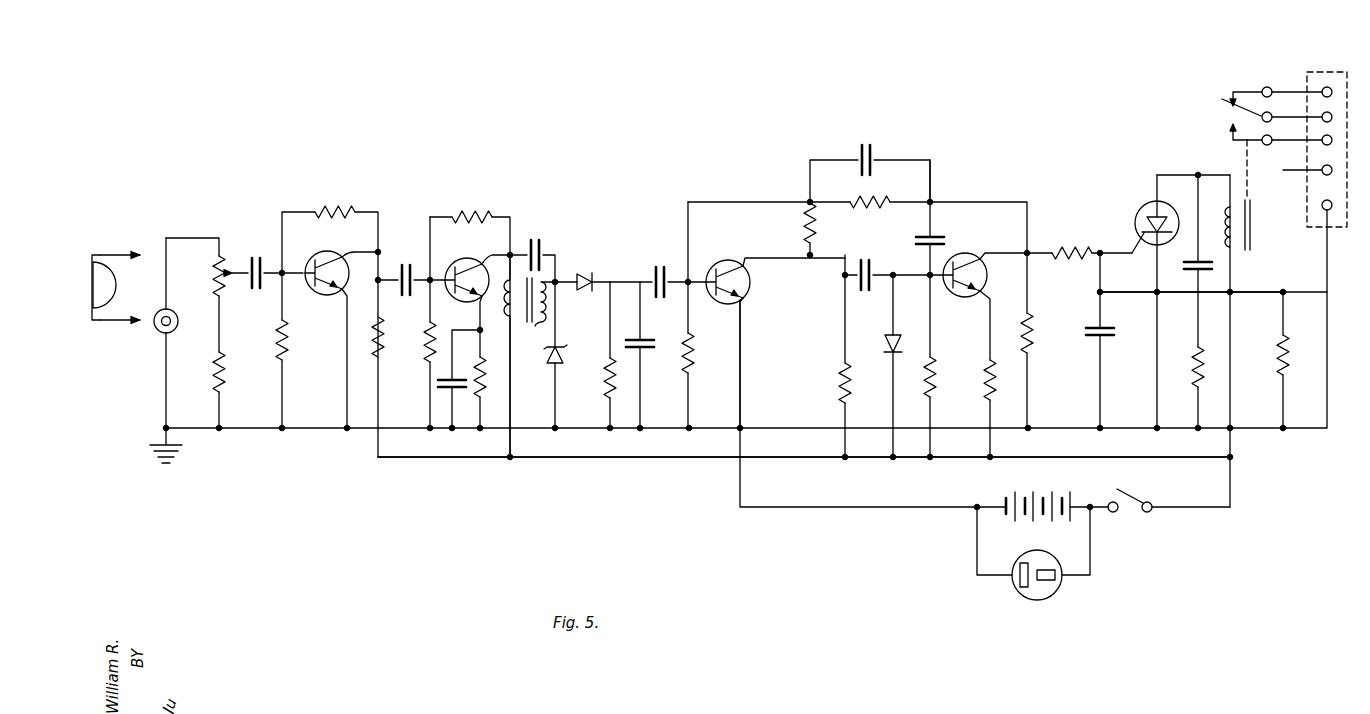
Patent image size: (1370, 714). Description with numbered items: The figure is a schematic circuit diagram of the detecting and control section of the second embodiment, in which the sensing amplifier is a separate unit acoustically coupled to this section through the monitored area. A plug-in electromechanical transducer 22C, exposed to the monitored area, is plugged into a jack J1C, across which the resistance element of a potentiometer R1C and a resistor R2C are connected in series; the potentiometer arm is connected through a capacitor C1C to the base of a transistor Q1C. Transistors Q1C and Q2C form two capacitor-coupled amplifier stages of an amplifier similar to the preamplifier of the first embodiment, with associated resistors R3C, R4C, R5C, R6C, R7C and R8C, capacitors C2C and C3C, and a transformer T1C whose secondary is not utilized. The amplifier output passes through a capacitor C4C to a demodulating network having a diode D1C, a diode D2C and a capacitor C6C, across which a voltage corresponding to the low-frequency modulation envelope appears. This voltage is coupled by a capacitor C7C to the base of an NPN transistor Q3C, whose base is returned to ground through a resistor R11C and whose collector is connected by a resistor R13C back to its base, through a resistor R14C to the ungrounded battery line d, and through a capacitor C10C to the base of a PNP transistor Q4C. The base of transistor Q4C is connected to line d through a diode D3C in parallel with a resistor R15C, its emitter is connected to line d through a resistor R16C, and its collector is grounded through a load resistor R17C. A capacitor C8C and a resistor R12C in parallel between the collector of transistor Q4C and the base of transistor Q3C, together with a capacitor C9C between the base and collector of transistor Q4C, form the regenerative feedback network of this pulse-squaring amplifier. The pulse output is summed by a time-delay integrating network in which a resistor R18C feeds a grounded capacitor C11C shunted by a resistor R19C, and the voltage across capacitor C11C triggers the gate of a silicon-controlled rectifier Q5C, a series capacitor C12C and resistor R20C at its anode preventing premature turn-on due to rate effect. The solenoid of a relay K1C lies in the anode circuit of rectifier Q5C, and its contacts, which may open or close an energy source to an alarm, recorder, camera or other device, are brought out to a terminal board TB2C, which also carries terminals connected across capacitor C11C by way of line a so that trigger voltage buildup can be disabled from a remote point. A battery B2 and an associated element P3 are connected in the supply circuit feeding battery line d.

The electromechanical transducer 22C is at (96, 252).
The jack J1C is at (154, 326).
The potentiometer R1C is at (219, 290).
The resistor R2C is at (234, 378).
The capacitor C1C is at (272, 258).
The resistor R3C is at (268, 346).
The transistor Q1C is at (342, 252).
The resistor R4C is at (335, 210).
The capacitor C2C is at (405, 262).
The resistor R5C is at (395, 340).
The resistor R6C is at (428, 358).
The transistor Q2C is at (452, 270).
The resistor R7C is at (472, 216).
The capacitor C3C is at (466, 374).
The resistor R8C is at (484, 388).
The coupling capacitor C4C is at (536, 238).
The transformer T1C is at (529, 356).
The diode D2C is at (550, 359).
The diode D1C is at (584, 268).
The capacitor C6C is at (660, 326).
The capacitor C7C is at (674, 258).
The NPN transistor Q3C is at (719, 258).
The resistor R11C is at (691, 366).
The resistor R13C is at (806, 224).
The capacitor C8C is at (872, 146).
The resistor R12C is at (868, 206).
The capacitor C10C is at (878, 258).
The resistor R14C is at (850, 356).
The diode D3C is at (890, 358).
The capacitor C9C is at (946, 238).
The PNP transistor Q4C is at (975, 260).
The resistor R15C is at (933, 357).
The resistor R16C is at (988, 392).
The load resistor R17C is at (1038, 321).
The capacitor C11C is at (1086, 350).
The resistor R18C is at (1082, 232).
The silicon-controlled rectifier Q5C is at (1144, 204).
The capacitor C12C is at (1182, 274).
The resistor R20C is at (1190, 369).
The resistor R19C is at (1266, 346).
The relay K1C is at (1272, 155).
The terminal board TB2C is at (1315, 132).
The battery B2 is at (1079, 495).
The plug connector P3 is at (1032, 600).
The supply lead a is at (1298, 428).
The ungrounded battery line d is at (597, 458).